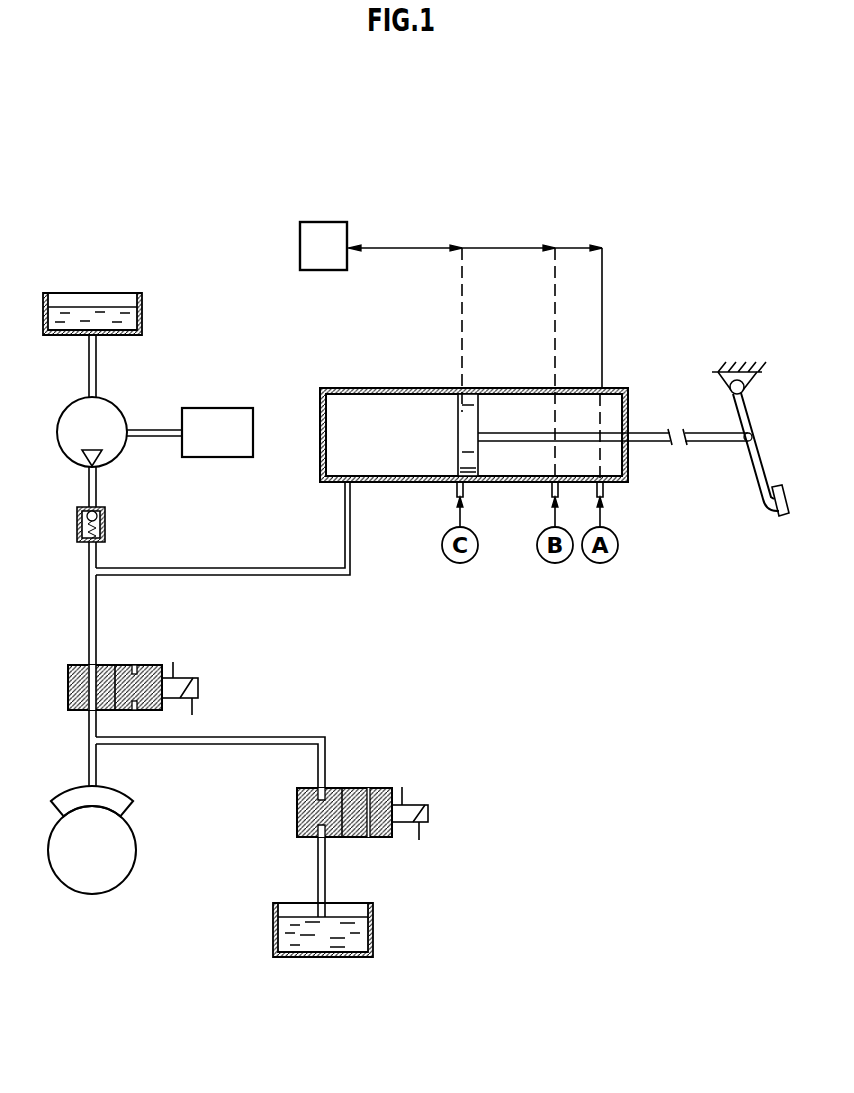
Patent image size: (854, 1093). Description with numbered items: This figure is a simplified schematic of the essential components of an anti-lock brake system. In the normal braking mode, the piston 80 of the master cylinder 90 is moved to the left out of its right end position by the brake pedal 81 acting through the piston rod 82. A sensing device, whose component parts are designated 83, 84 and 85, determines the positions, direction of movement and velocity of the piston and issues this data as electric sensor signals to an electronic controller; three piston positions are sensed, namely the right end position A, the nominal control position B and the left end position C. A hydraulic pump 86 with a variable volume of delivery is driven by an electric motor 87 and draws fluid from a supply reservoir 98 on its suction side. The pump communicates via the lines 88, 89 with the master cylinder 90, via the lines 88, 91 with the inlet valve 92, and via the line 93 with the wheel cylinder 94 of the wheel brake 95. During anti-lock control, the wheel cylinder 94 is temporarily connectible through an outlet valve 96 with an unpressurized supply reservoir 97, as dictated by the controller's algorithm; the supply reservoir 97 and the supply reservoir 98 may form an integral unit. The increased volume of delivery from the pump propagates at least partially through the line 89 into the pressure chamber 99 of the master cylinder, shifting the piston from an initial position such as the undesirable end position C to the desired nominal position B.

The piston 80 is at (470, 405).
The brake pedal 81 is at (757, 473).
The piston rod 82 is at (515, 433).
The sensing device component 83 is at (322, 222).
The sensing device component 84 is at (503, 247).
The sensing device component 85 is at (603, 298).
The hydraulic pump 86 is at (113, 423).
The electric motor 87 is at (243, 412).
The line 88 is at (97, 492).
The line 89 is at (220, 569).
The master cylinder 90 is at (398, 483).
The line 91 is at (86, 620).
The inlet valve 92 is at (70, 672).
The line 93 is at (86, 760).
The wheel cylinder 94 is at (112, 798).
The wheel brake 95 is at (122, 850).
The outlet valve 96 is at (355, 790).
The supply reservoir 97 is at (373, 930).
The supply reservoir 98 is at (143, 300).
The pressure chamber 99 is at (379, 446).